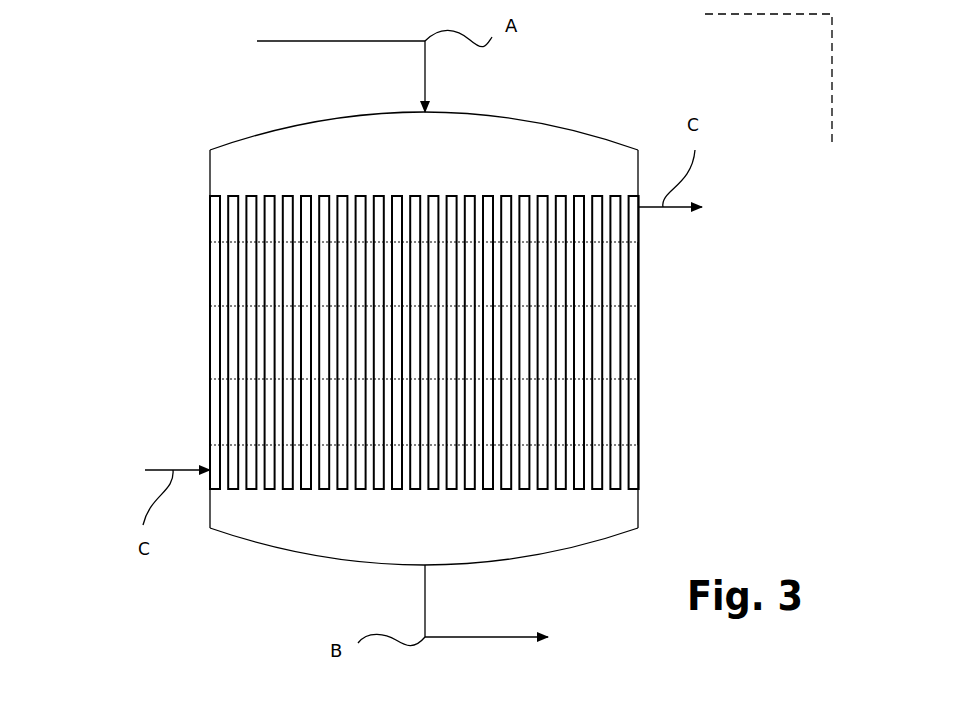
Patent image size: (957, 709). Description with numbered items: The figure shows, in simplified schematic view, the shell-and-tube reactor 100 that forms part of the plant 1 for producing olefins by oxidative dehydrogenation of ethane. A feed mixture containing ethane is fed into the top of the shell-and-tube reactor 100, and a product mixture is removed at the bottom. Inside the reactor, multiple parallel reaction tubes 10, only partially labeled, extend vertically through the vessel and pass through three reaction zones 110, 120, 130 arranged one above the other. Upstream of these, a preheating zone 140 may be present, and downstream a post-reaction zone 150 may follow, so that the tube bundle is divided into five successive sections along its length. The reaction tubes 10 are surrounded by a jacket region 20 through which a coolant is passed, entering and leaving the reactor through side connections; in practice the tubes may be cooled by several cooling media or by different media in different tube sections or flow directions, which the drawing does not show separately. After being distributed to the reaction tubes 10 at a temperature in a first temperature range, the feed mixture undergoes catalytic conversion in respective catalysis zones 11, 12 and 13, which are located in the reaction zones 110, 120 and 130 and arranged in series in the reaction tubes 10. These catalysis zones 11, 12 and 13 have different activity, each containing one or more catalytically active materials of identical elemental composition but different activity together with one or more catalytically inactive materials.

The plant 1 is at (832, 68).
The reaction tubes 10 is at (381, 302).
The catalysis zone 11 is at (638, 273).
The catalysis zone 12 is at (638, 345).
The catalysis zone 13 is at (638, 413).
The jacket region 20 is at (215, 273).
The shell-and-tube reactor 100 is at (268, 547).
The reaction zone 110 is at (78, 243).
The reaction zone 120 is at (78, 308).
The reaction zone 130 is at (78, 374).
The preheating zone 140 is at (78, 195).
The post-reaction zone 150 is at (78, 441).